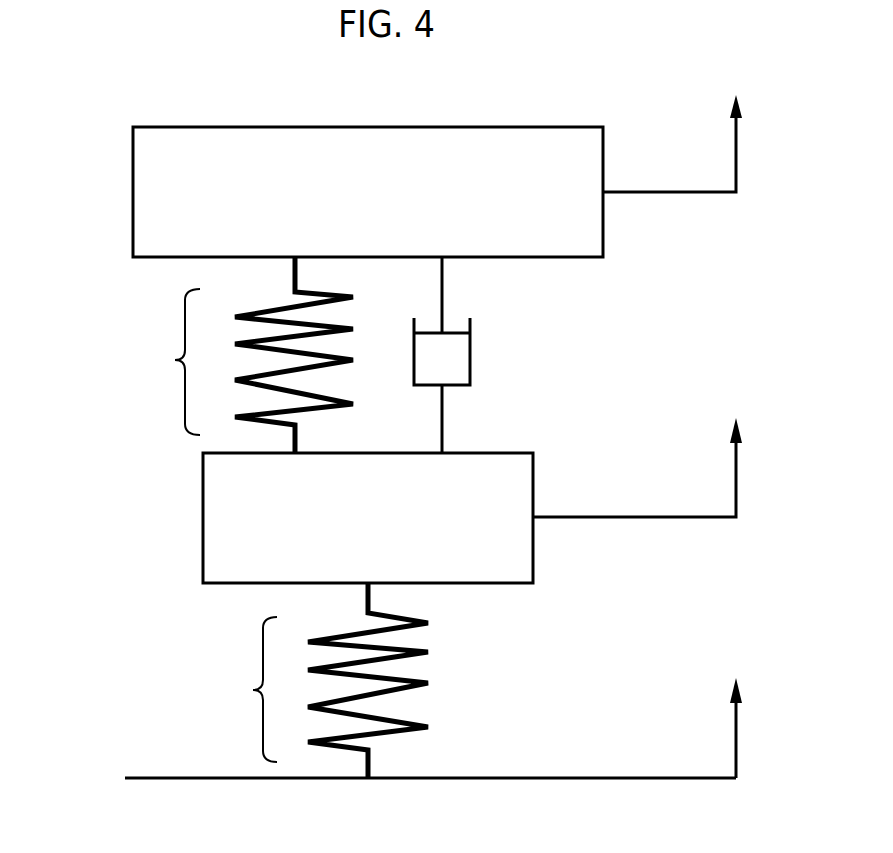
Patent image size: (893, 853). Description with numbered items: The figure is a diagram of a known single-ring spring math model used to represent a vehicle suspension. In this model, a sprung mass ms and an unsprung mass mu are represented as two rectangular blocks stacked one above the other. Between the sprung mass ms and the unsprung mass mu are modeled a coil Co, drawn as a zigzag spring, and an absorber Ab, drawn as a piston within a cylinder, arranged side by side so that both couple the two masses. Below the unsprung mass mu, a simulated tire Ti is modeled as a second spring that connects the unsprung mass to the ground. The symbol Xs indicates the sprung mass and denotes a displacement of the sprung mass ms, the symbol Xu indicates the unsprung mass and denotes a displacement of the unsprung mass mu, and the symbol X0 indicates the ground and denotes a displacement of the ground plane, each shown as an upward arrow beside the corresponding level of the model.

The sprung mass ms is at (368, 192).
The unsprung mass mu is at (368, 518).
The coil Co is at (173, 360).
The absorber Ab is at (470, 357).
The simulated tire Ti is at (250, 690).
The sprung mass displacement Xs is at (697, 143).
The unsprung mass displacement Xu is at (663, 467).
The ground plane displacement X0 is at (761, 728).